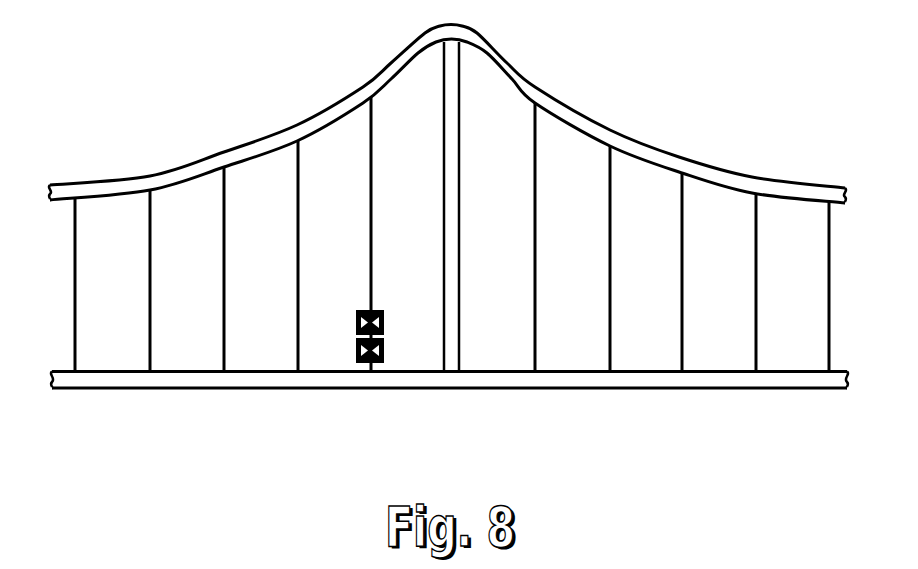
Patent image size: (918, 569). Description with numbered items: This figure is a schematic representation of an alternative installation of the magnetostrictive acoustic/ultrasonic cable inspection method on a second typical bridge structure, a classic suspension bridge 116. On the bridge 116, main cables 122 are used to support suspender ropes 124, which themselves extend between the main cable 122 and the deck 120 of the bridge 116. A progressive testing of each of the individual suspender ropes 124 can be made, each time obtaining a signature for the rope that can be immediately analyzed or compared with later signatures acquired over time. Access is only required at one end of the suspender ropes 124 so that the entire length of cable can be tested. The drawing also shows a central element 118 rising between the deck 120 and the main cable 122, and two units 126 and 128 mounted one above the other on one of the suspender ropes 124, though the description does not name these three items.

The bridge 116 is at (263, 101).
The center post 118 is at (470, 88).
The deck 120 is at (519, 403).
The main cable 122 is at (592, 101).
The suspender ropes 124 is at (208, 195).
The upper coupler 126 is at (385, 322).
The lower coupler 128 is at (355, 352).